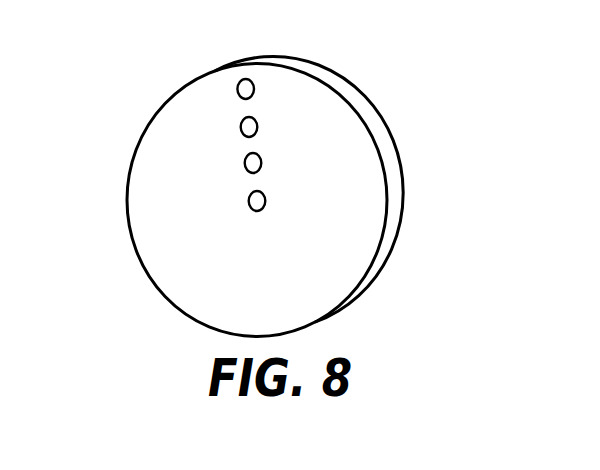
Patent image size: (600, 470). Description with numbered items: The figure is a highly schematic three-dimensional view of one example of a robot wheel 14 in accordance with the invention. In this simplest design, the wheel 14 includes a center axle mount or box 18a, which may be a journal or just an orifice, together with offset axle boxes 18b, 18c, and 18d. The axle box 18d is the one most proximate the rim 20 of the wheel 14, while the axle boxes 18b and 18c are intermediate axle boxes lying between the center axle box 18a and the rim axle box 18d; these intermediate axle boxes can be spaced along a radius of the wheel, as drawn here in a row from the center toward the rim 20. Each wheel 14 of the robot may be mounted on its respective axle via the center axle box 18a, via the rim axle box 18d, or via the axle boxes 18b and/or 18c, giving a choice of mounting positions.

The wheel 14 is at (410, 111).
The rim 20 is at (236, 63).
The center axle mount or box 18a is at (255, 202).
The intermediate axle box 18b is at (251, 163).
The intermediate axle box 18c is at (247, 127).
The rim axle box 18d is at (244, 90).